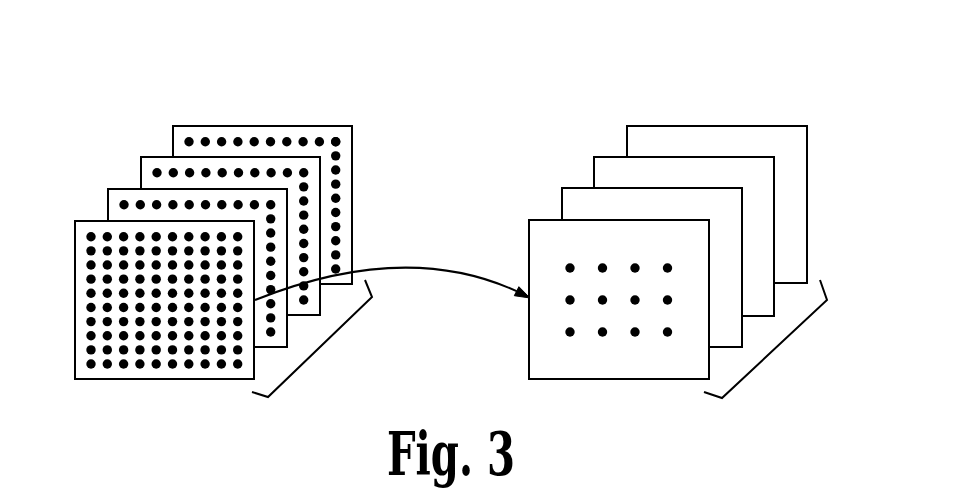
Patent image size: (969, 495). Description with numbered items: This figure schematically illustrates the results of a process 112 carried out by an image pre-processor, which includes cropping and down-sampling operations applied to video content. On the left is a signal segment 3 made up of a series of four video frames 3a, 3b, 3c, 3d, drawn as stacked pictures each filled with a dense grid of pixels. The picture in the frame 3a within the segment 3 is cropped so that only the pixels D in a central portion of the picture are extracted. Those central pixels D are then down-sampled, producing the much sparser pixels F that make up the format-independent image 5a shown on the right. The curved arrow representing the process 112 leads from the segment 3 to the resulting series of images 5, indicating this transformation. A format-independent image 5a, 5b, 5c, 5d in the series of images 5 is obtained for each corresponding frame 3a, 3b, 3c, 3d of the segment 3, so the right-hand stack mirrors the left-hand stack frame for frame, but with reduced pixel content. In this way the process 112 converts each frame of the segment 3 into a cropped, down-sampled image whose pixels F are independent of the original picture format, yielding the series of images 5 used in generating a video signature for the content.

The signal segment 3 is at (217, 244).
The video frame 3a is at (93, 220).
The video frame 3b is at (125, 188).
The video frame 3c is at (157, 157).
The video frame 3d is at (190, 125).
The pixels D is at (338, 137).
The process 112 is at (385, 267).
The series of images 5 is at (651, 248).
The format-independent image 5a is at (547, 219).
The format-independent image 5b is at (580, 187).
The format-independent image 5c is at (612, 155).
The format-independent image 5d is at (644, 125).
The pixels F is at (566, 265).